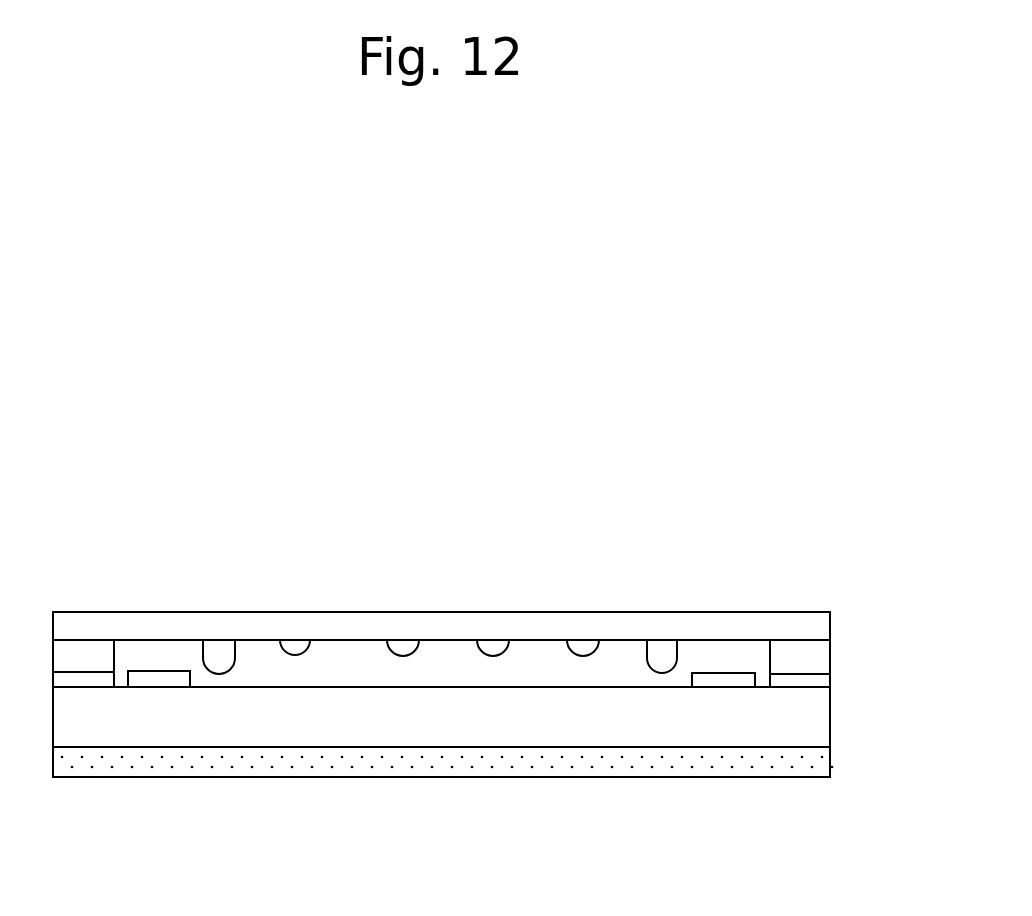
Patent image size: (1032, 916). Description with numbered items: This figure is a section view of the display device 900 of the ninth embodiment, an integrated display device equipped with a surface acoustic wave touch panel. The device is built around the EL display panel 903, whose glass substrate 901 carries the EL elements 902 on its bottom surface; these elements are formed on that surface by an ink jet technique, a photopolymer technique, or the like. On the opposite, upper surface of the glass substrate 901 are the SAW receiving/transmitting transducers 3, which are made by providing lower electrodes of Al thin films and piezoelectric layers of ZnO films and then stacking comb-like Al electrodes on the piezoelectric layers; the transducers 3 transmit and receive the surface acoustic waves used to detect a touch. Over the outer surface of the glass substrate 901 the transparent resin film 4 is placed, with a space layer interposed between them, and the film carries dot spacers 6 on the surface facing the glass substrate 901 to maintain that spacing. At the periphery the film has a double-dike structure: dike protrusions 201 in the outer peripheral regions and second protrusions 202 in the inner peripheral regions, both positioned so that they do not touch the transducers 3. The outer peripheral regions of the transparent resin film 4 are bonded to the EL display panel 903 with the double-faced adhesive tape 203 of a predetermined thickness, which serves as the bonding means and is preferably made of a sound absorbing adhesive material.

The display device 900 is at (452, 457).
The EL display panel 903 is at (845, 688).
The glass substrate 901 is at (738, 733).
The EL elements 902 is at (568, 762).
The transparent resin film 4 is at (312, 612).
The dot spacers 6 is at (297, 656).
The transducers 3 is at (175, 680).
The double-faced adhesive tape 203 is at (83, 678).
The second protrusions 202 is at (660, 657).
The dike protrusions 201 is at (785, 660).